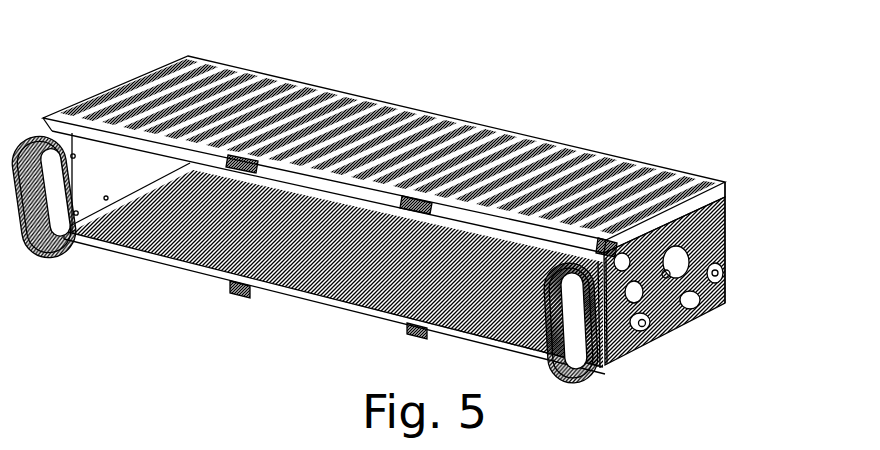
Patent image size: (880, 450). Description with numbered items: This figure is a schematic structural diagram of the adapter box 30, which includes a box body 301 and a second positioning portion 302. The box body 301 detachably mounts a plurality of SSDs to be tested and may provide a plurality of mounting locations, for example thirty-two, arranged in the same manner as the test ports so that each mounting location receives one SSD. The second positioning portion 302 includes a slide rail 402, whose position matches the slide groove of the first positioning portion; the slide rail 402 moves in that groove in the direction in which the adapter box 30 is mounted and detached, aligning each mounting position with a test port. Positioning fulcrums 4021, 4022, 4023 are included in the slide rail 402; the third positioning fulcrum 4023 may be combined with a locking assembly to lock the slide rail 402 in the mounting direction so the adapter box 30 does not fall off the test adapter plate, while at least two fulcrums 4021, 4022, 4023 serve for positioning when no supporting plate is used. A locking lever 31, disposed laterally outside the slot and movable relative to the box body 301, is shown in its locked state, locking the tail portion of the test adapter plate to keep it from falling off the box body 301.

The adapter box 30 is at (462, 38).
The locking lever 31 is at (50, 122).
The box body 301 is at (510, 136).
The second positioning portion 302 is at (628, 357).
The slide rail 402 is at (727, 275).
The first positioning fulcrum 4021 is at (716, 271).
The second positioning fulcrum 4022 is at (646, 327).
The third positioning fulcrum 4023 is at (663, 270).